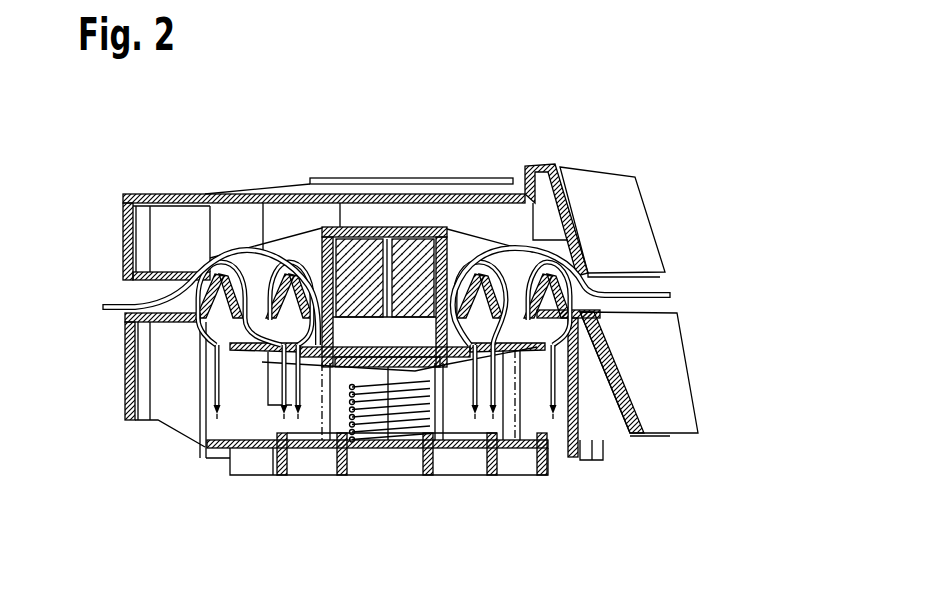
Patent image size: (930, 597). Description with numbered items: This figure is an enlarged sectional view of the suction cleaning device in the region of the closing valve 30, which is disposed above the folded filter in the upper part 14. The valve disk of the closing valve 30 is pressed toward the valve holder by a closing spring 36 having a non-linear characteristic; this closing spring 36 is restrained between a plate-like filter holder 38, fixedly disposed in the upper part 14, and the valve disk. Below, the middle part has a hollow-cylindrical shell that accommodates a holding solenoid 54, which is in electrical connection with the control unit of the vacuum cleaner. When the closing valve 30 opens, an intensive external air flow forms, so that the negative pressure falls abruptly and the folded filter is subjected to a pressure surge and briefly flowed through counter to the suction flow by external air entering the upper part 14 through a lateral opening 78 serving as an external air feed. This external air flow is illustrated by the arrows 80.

The upper part 14 is at (609, 158).
The closing valve 30 is at (304, 253).
The closing spring 36 is at (357, 433).
The filter holder 38 is at (426, 433).
The holding solenoid 54 is at (419, 228).
The lateral opening 78 is at (660, 277).
The arrows 80 is at (503, 246).